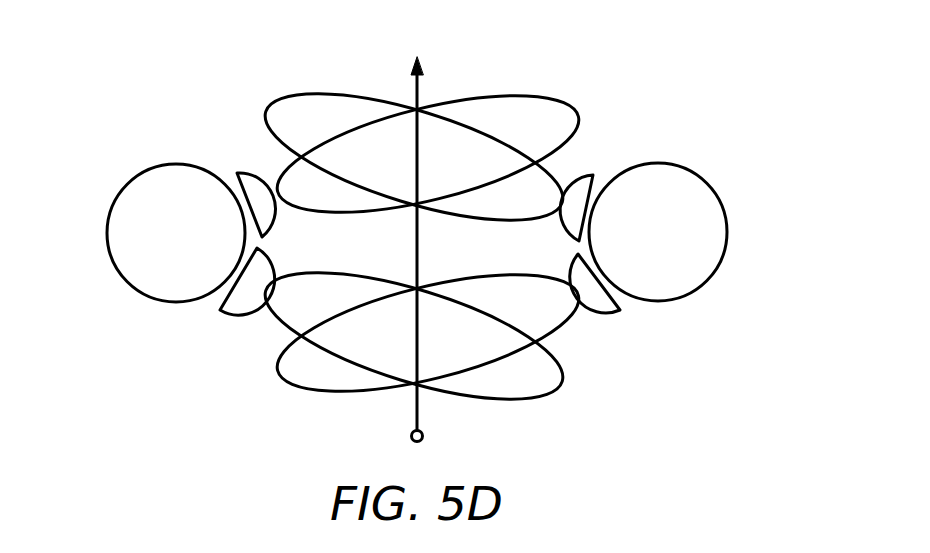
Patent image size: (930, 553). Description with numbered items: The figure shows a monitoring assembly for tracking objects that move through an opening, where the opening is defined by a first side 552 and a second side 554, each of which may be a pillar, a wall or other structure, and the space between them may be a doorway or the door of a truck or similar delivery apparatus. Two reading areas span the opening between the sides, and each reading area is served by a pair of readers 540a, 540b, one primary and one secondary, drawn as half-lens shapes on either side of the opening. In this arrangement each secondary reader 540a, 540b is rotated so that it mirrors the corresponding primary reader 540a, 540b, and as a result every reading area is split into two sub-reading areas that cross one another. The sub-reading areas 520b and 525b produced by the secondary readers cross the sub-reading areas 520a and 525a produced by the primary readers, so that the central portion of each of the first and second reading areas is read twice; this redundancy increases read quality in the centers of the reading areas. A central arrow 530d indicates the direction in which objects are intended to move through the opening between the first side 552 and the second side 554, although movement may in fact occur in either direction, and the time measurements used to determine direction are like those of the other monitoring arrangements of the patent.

The sub-reading area 520a is at (533, 401).
The sub-reading area 520b is at (508, 255).
The sub-reading area 525a is at (308, 91).
The sub-reading area 525b is at (353, 210).
The arrow 530d is at (419, 86).
The readers 540a is at (222, 308).
The readers 540b is at (238, 172).
The first side 552 is at (113, 268).
The second side 554 is at (720, 263).